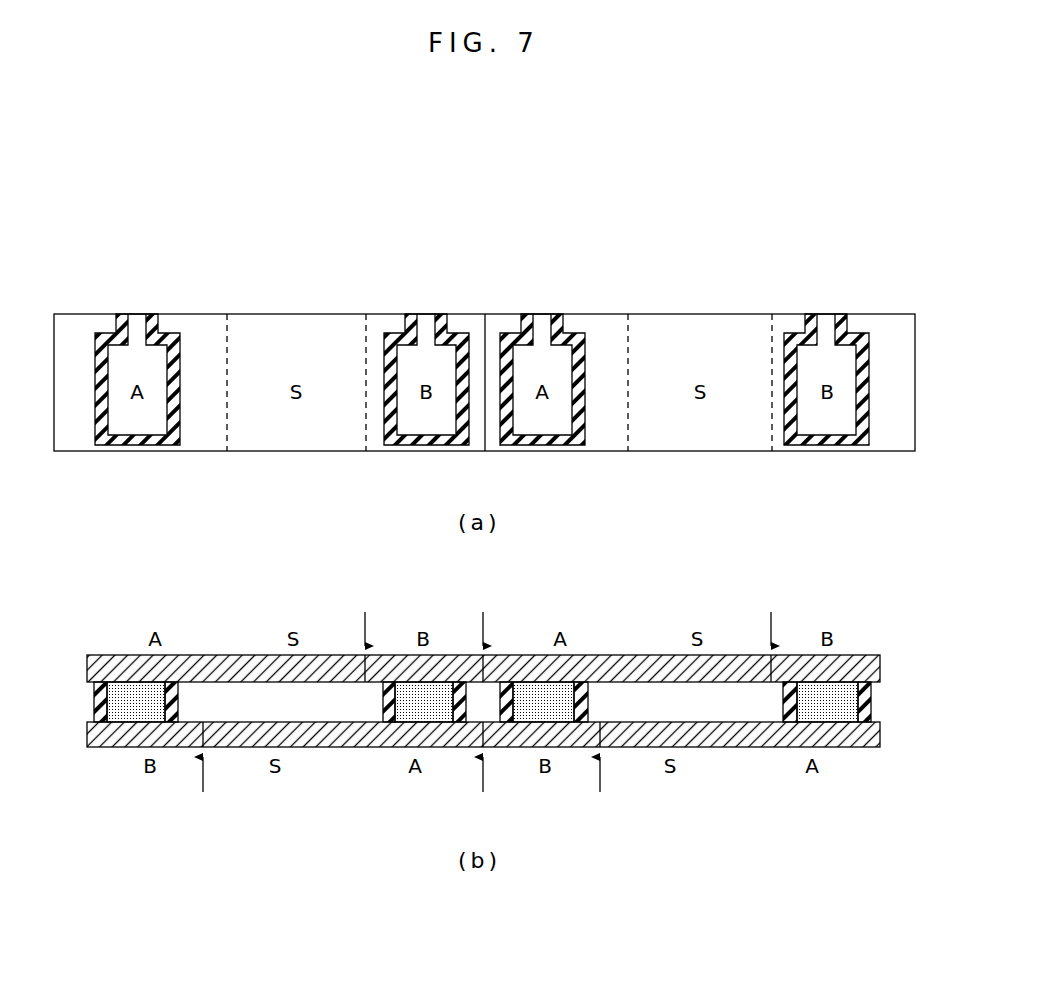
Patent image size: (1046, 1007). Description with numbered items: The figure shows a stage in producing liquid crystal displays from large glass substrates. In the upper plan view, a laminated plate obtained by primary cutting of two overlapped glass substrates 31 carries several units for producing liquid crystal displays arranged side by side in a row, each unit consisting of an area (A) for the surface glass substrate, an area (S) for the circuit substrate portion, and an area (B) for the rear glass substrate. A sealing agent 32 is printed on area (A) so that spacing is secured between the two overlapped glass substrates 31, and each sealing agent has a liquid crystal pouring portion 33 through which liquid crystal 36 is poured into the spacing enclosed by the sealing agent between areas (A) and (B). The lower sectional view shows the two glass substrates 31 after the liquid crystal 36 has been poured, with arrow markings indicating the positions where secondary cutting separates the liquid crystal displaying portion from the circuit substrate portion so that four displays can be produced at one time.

The glass substrate 31 is at (695, 314).
The sealing agent 32 is at (580, 334).
The liquid crystal pouring portion 33 is at (139, 322).
The liquid crystal 36 is at (840, 718).